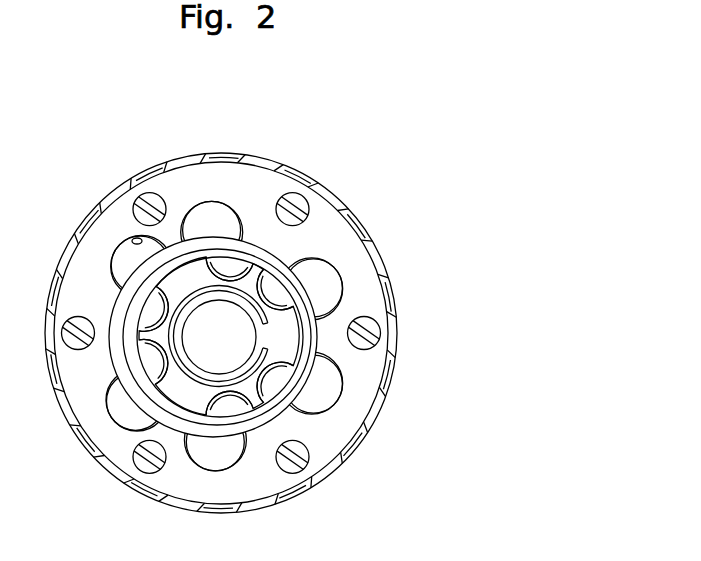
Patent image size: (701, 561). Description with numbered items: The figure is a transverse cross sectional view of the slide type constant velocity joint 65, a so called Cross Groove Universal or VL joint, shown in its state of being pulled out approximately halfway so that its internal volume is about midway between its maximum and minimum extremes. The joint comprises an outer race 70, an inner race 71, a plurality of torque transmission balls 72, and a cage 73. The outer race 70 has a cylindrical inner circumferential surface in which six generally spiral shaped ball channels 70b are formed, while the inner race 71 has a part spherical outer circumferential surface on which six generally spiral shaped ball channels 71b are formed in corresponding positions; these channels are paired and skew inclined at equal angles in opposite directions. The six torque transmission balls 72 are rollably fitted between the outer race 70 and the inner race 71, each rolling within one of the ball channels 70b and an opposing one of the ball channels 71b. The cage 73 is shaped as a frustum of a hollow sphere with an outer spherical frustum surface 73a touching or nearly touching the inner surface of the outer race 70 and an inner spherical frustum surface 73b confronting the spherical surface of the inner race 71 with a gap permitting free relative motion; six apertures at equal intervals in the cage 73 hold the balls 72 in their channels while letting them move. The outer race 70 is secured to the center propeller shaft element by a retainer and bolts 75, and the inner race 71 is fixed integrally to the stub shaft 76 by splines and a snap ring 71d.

The slide type constant velocity joint 65 is at (351, 168).
The outer race 70 is at (213, 176).
The ball channels 70b is at (134, 238).
The inner race 71 is at (290, 338).
The ball channels 71b is at (266, 400).
The snap ring 71d is at (211, 384).
The torque transmission balls 72 is at (228, 208).
The cage 73 is at (277, 246).
The outer spherical frustum surface 73a is at (118, 404).
The inner spherical frustum surface 73b is at (133, 300).
The bolts 75 is at (304, 474).
The stub shaft 76 is at (190, 341).